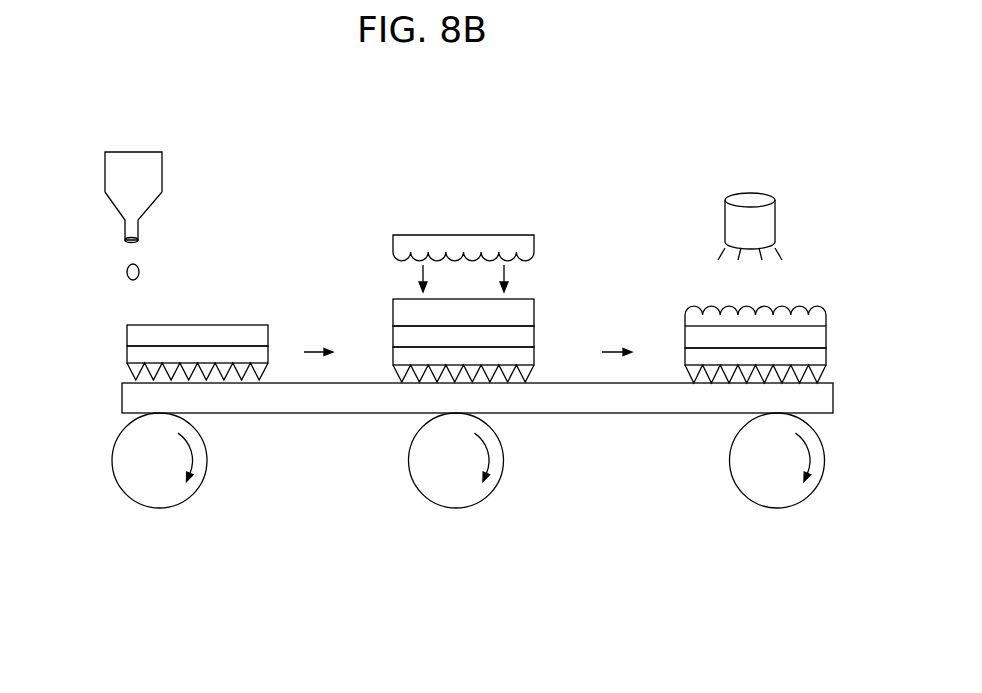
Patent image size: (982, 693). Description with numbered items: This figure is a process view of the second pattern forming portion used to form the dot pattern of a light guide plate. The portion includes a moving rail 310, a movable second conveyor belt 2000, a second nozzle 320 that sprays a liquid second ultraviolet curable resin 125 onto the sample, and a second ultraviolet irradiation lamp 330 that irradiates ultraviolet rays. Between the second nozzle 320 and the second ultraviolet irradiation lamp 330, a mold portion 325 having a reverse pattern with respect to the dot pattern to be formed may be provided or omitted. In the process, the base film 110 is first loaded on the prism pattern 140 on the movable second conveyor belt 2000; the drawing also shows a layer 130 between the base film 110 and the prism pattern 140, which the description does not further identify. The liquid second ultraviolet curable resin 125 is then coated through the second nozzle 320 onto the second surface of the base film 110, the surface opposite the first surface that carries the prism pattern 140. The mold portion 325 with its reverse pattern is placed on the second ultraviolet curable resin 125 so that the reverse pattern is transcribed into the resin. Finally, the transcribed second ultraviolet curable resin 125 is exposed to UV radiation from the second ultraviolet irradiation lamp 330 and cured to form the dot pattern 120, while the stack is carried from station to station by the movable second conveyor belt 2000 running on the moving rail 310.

The second nozzle 320 is at (110, 174).
The second ultraviolet curable resin 125 is at (127, 272).
The base film 110 is at (132, 338).
The intermediate layer 130 is at (242, 354).
The prism pattern 140 is at (130, 368).
The dot pattern 120 is at (823, 313).
The mold portion 325 is at (465, 241).
The second ultraviolet irradiation lamp 330 is at (773, 221).
The movable second conveyor belt 2000 is at (122, 400).
The moving rail 310 is at (765, 487).